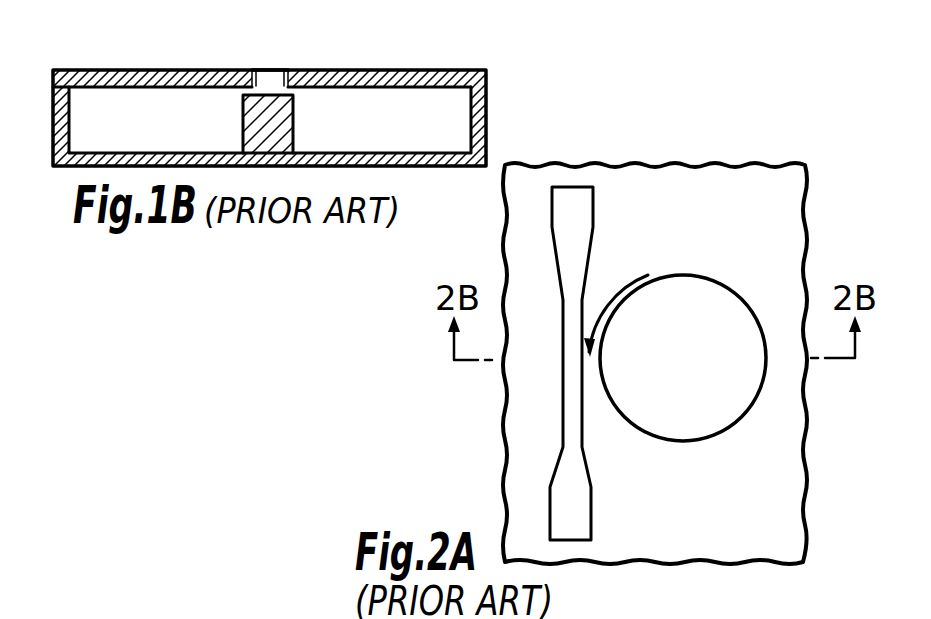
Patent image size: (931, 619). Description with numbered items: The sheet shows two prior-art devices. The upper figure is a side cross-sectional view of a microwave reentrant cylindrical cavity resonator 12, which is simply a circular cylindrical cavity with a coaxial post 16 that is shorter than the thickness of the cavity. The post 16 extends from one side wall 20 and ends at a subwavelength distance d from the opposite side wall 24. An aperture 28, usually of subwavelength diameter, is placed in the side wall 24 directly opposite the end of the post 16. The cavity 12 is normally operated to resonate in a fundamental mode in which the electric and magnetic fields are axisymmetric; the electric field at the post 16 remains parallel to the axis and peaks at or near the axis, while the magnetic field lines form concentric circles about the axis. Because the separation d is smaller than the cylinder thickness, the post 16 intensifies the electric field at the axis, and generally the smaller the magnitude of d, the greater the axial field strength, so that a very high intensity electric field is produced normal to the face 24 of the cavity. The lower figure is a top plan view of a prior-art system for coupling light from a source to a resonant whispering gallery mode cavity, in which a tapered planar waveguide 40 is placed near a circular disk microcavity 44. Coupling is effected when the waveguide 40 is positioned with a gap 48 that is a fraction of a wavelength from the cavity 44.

In FIG. 1B, the reentrant cylindrical cavity resonator 12 is at (269, 94).
In FIG. 1B, the coaxial post 16 is at (290, 122).
In FIG. 1B, the side wall 20 is at (342, 153).
In FIG. 1B, the opposite side wall 24 is at (383, 82).
In FIG. 1B, the aperture 28 is at (266, 60).
In FIG. 1B, the subwavelength distance d is at (235, 94).
In FIG. 2A, the tapered planar waveguide 40 is at (565, 380).
In FIG. 2A, the circular disk microcavity 44 is at (717, 300).
In FIG. 2A, the gap 48 is at (627, 302).